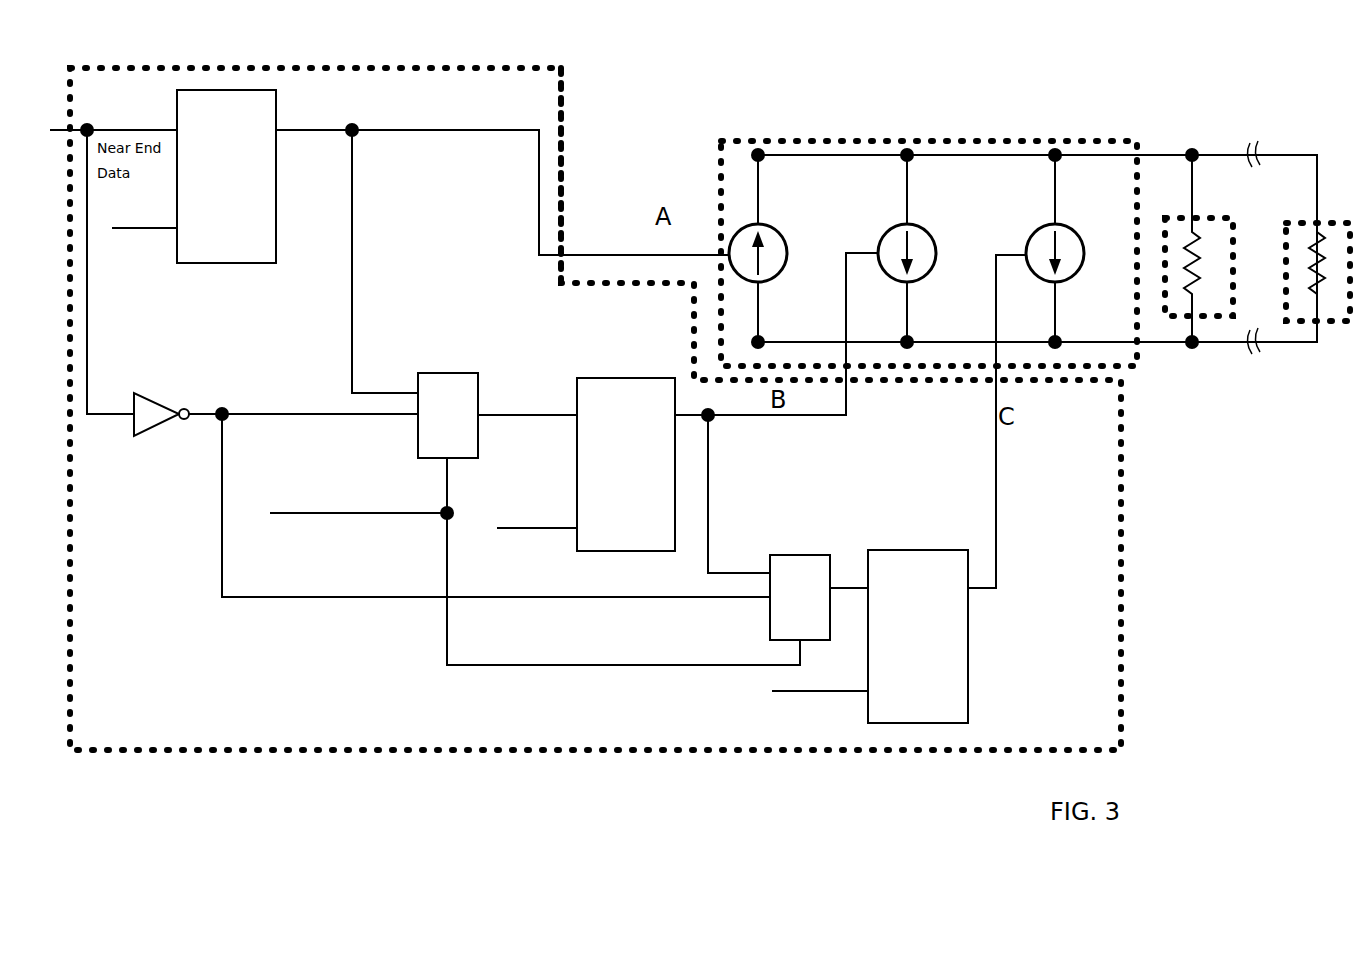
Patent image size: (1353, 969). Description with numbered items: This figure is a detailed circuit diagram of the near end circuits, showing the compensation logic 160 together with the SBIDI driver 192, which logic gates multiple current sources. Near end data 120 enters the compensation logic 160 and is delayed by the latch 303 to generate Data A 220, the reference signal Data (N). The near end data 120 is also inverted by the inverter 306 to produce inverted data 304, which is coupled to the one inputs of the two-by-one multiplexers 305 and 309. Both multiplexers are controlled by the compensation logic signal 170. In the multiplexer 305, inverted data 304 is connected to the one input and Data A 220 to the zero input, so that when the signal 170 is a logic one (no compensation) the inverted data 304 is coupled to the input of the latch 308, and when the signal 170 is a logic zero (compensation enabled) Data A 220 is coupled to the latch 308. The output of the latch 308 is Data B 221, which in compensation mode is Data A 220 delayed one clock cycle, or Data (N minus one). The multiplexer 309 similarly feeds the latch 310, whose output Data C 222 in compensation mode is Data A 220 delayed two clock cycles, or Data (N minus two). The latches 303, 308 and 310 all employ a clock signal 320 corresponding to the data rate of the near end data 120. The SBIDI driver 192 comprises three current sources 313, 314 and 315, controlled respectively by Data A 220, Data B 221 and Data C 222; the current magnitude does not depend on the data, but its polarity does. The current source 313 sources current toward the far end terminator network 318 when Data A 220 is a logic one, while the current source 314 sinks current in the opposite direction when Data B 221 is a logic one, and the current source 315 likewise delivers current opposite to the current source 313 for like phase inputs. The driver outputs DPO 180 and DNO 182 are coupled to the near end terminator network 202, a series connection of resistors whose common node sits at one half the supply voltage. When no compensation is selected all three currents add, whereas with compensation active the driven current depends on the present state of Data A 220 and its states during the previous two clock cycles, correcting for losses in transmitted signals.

The near end data 120 is at (137, 125).
The compensation logic 160 is at (565, 112).
The compensation logic signal (CP) 170 is at (303, 518).
The DPO 180 is at (1212, 157).
The DNO 182 is at (1207, 350).
The SBIDI driver 192 is at (875, 141).
The near end terminator network (TN) 202 is at (1177, 212).
The Data A 220 is at (413, 136).
The Data B 221 is at (858, 412).
The Data C 222 is at (996, 500).
The latch (L) 303 is at (243, 265).
The inverted Data (ID) 304 is at (242, 410).
The multiplexer (MUX) 305 is at (455, 373).
The inverter 306 is at (147, 393).
The latch (L) 308 is at (607, 378).
The multiplexer (MUX) 309 is at (778, 555).
The latch (L) 310 is at (878, 550).
The current source (CS) 313 is at (778, 222).
The current source (CS) 314 is at (915, 222).
The current source (CS) 315 is at (1062, 224).
The far end terminator network 318 is at (1303, 268).
The clock signal 320 is at (146, 255).